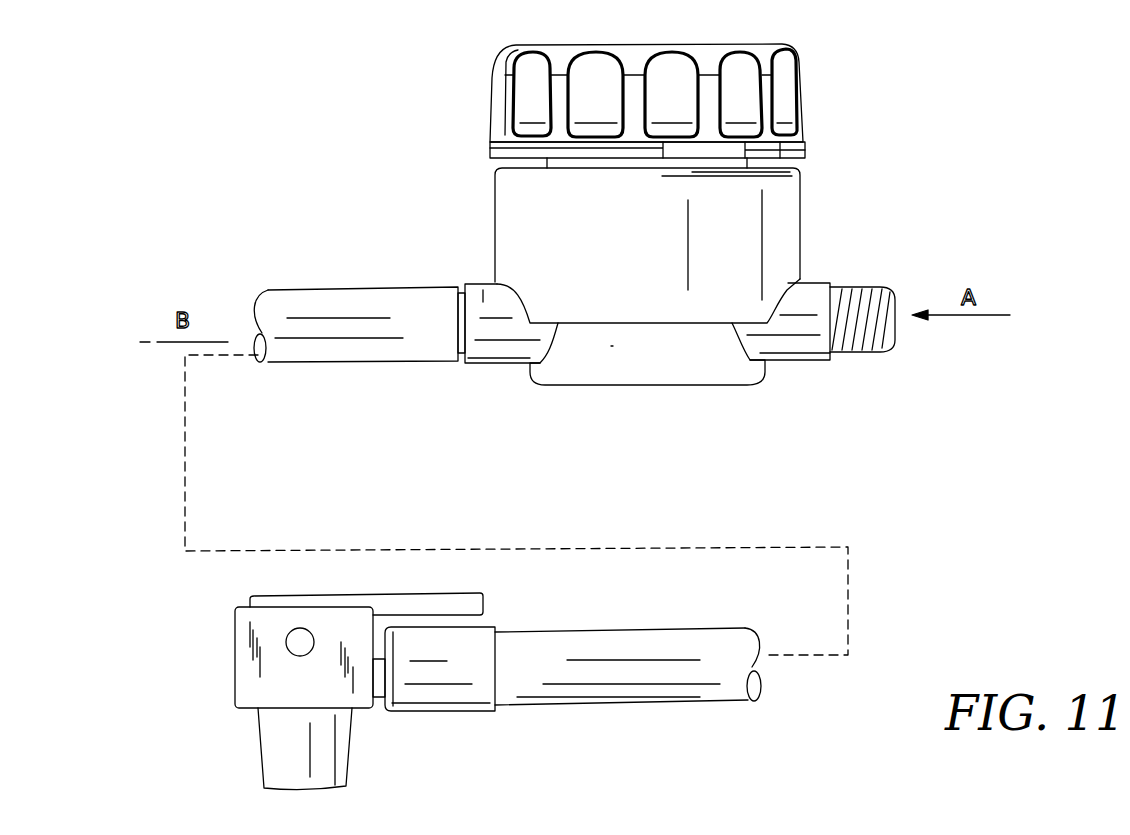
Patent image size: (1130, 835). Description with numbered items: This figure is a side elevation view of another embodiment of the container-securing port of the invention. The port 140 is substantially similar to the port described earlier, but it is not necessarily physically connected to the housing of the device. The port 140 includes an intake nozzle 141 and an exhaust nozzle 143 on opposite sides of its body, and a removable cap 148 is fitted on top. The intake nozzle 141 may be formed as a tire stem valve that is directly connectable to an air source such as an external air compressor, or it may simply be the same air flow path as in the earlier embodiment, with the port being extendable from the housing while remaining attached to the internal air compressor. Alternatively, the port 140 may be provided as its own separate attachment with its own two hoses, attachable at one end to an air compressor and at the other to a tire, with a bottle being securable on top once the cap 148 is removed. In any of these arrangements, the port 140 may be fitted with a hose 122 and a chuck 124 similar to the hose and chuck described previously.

The cap 148 is at (508, 98).
The port 140 is at (745, 213).
The intake nozzle 141 is at (780, 343).
The exhaust nozzle 143 is at (484, 298).
The chuck 124 is at (310, 754).
The hose 122 is at (600, 685).